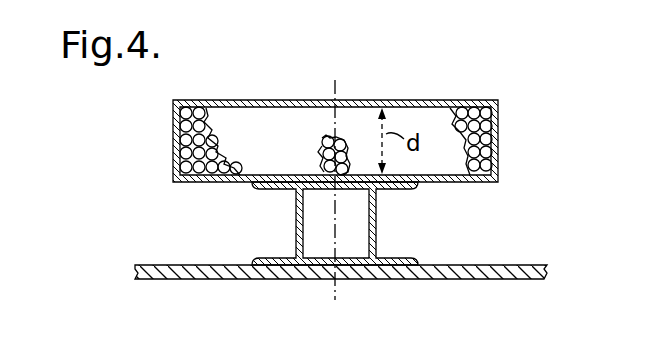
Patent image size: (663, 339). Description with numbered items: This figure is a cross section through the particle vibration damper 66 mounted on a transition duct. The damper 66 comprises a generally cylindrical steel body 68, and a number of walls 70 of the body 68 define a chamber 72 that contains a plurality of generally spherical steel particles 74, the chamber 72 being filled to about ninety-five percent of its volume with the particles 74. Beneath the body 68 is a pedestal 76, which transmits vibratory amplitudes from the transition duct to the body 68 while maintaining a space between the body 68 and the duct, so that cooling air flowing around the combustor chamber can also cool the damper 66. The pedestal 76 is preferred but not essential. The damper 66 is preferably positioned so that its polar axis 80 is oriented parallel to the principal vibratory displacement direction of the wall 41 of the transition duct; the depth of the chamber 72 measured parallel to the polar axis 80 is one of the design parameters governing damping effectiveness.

The wall of the transition duct 41 is at (505, 265).
The particle vibration damper 66 is at (338, 117).
The body 68 is at (164, 144).
The walls 70 is at (499, 116).
The chamber 72 is at (413, 120).
The particles 74 is at (325, 140).
The pedestal 76 is at (369, 209).
The polar axis 80 is at (338, 92).